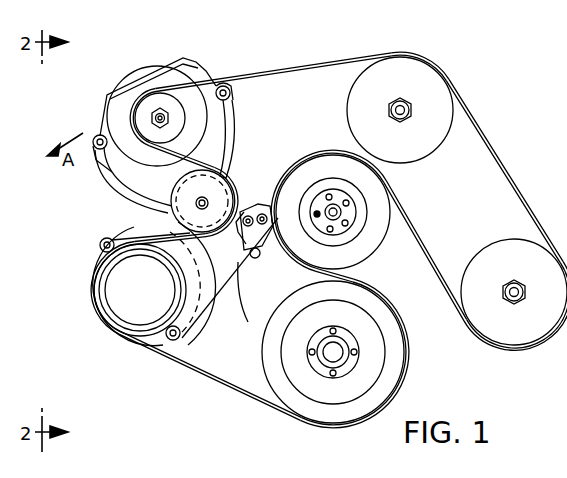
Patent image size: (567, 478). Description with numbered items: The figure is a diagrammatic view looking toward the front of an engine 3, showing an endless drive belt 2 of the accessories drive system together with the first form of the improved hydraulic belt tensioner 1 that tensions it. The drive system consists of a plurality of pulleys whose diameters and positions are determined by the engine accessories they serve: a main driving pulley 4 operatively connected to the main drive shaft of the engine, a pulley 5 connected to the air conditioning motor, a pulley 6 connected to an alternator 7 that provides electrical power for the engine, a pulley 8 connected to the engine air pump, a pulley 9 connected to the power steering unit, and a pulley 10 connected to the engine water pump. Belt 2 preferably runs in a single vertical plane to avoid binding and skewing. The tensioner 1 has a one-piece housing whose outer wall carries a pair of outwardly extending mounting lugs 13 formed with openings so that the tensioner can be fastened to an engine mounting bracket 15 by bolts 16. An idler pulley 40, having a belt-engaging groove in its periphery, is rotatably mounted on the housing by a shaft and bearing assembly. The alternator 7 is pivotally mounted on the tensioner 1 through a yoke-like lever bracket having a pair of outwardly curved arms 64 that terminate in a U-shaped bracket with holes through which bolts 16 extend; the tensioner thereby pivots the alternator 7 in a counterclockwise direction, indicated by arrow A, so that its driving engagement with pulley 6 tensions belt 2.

The belt tensioner 1 is at (236, 178).
The endless drive belt 2 is at (503, 158).
The engine 3 is at (178, 146).
The main driving pulley 4 is at (308, 408).
The pulley 5 is at (128, 327).
The pulley 6 is at (143, 118).
The alternator 7 is at (147, 80).
The pulley 8 is at (418, 72).
The pulley 9 is at (520, 334).
The pulley 10 is at (380, 203).
The mounting lugs 13 is at (263, 227).
The engine mounting bracket 15 is at (236, 284).
The bolts 16 is at (229, 88).
The idler pulley 40 is at (184, 212).
The outwardly curved arms 64 is at (234, 105).